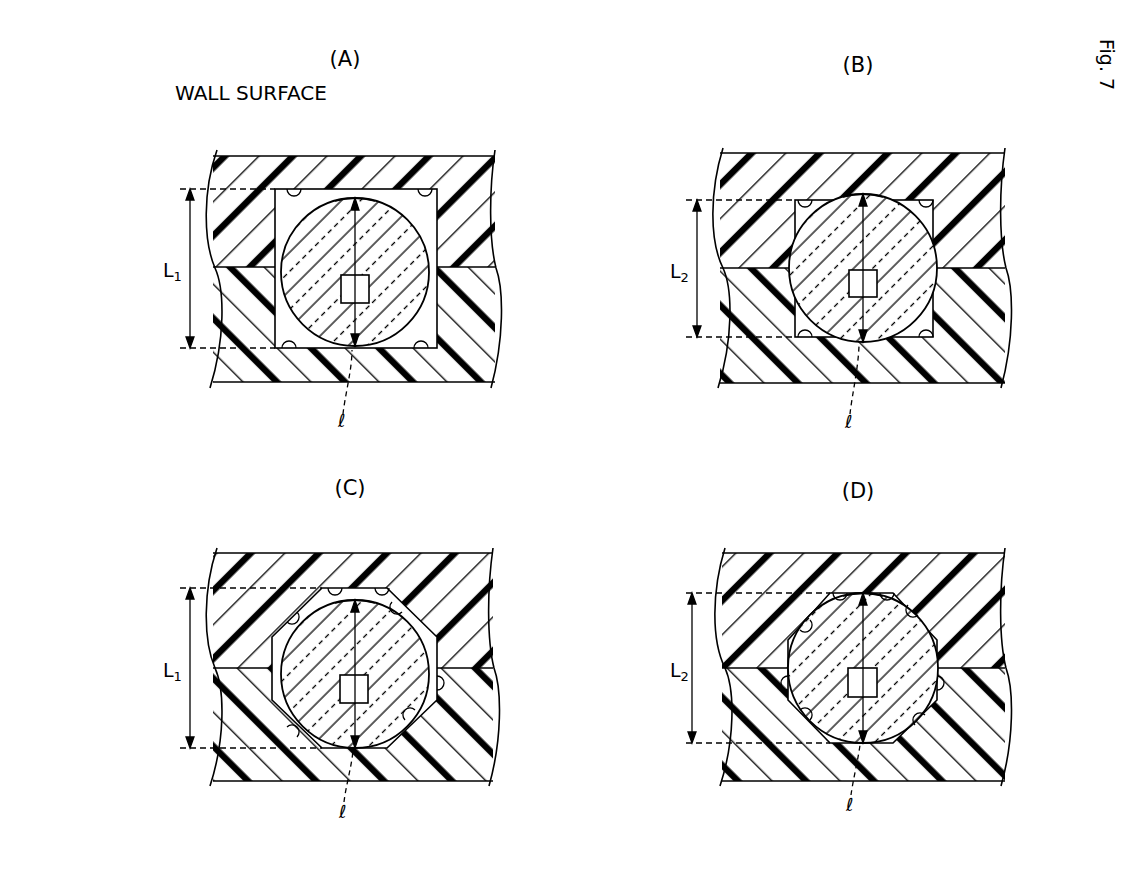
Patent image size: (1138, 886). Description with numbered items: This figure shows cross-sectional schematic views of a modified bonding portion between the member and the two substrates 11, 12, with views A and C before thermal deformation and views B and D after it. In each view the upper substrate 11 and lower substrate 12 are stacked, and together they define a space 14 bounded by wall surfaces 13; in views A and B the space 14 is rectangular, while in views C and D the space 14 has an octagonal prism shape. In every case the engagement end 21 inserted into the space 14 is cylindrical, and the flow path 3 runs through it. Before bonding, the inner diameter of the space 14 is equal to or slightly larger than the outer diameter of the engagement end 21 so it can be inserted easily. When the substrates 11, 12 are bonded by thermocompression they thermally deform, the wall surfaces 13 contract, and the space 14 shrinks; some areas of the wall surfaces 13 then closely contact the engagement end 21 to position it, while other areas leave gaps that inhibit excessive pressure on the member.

The flow path 3 is at (368, 305).
The substrate 11 is at (490, 215).
The substrate 12 is at (465, 314).
The wall surface 13 is at (294, 188).
The space 14 is at (440, 222).
The engagement end 21 is at (362, 198).